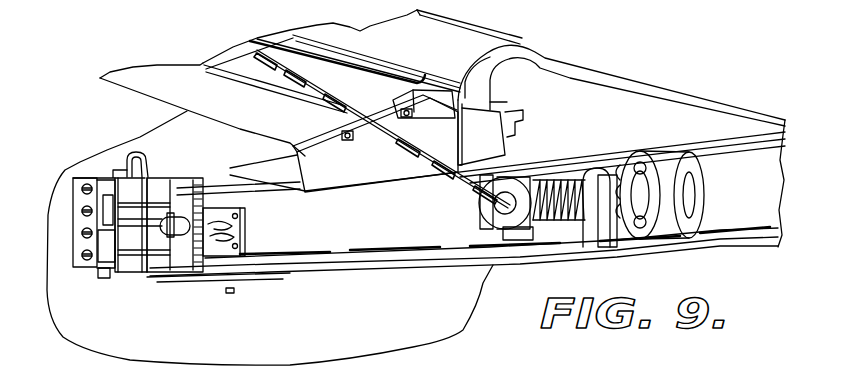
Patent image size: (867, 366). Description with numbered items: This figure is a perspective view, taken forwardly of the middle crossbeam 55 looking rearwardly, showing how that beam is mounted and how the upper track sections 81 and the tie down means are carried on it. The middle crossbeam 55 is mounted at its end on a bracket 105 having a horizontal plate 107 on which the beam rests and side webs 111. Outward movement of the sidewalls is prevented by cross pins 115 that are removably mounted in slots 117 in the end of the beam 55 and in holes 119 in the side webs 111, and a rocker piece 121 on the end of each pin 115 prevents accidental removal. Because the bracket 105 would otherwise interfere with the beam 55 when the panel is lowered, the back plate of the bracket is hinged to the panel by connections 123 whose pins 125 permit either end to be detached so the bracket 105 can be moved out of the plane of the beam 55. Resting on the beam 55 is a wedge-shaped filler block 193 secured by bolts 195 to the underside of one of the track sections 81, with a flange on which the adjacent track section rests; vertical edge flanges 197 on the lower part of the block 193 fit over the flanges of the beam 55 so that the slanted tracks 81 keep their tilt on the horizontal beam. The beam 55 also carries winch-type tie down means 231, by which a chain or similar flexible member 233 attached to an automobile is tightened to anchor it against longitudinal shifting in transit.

The middle crossbeam 55 is at (388, 248).
The upper track sections 81 is at (544, 68).
The bracket 105 is at (186, 262).
The horizontal plate 107 is at (217, 285).
The side webs 111 is at (178, 252).
The cross pins 115 is at (243, 224).
The slots 117 is at (243, 233).
The holes 119 is at (193, 212).
The rocker piece 121 is at (167, 213).
The hinged connections 123 is at (103, 217).
The pins 125 is at (113, 170).
The wedge-shaped filler block 193 is at (390, 173).
The bolts 195 is at (347, 140).
The vertical edge flanges 197 is at (443, 178).
The tie down means 231 is at (553, 233).
The chain 233 is at (408, 118).